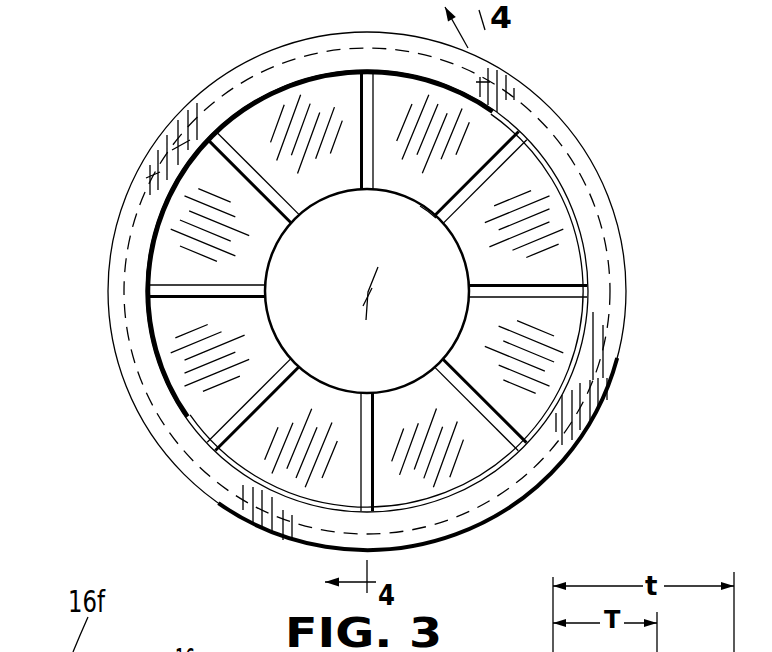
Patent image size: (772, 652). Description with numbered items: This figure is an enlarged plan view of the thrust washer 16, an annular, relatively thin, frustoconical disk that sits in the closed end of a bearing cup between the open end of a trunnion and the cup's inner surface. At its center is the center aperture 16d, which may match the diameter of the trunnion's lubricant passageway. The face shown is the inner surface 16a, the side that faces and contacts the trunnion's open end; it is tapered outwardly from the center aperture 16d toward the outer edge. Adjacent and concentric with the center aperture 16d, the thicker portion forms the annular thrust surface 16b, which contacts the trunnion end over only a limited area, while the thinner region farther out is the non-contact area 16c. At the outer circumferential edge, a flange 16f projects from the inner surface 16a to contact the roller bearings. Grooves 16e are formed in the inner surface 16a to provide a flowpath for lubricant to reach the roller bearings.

The thrust washer 16 is at (610, 125).
The inner surface 16a is at (288, 118).
The thrust surface 16b is at (328, 393).
The non-contact area 16c is at (560, 358).
The center aperture 16d is at (420, 208).
The grooves 16e is at (223, 427).
The flange 16f is at (145, 162).